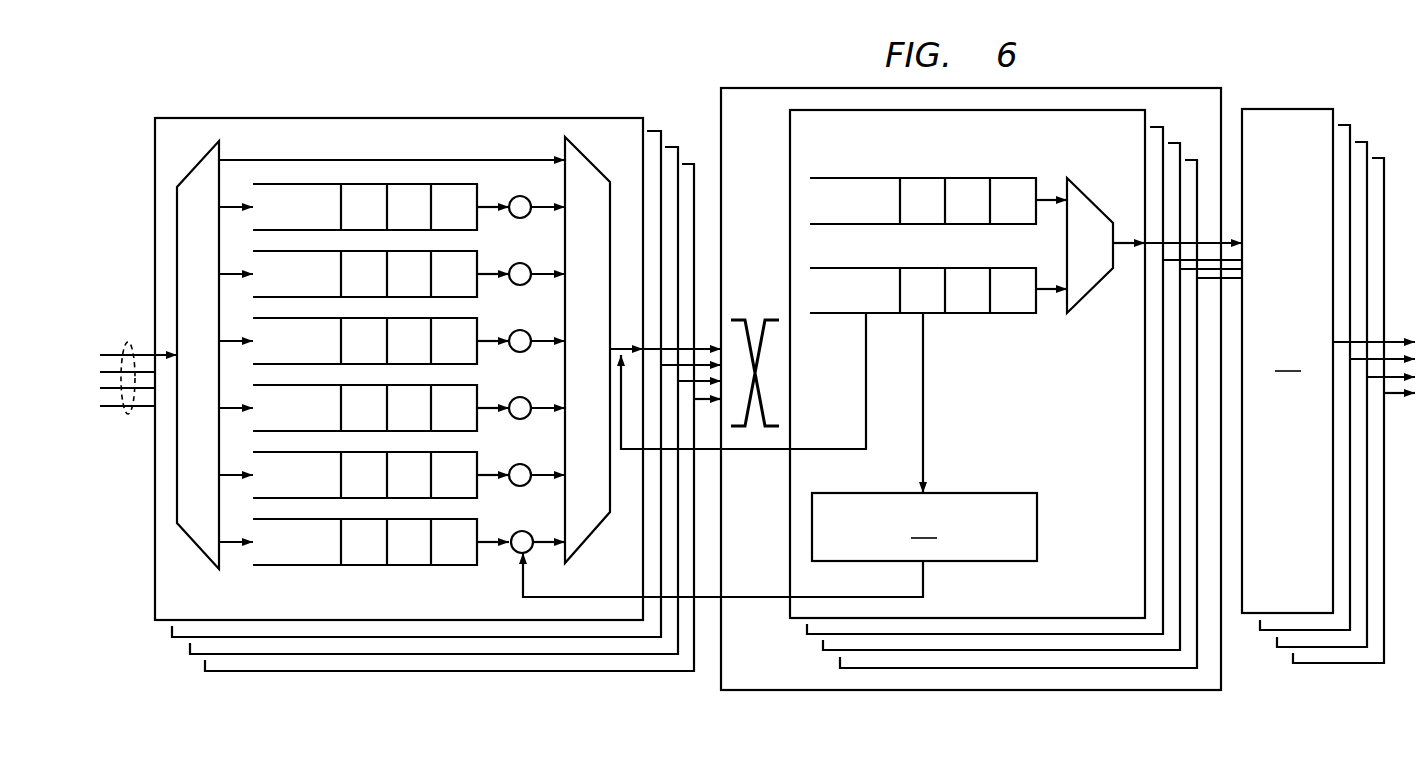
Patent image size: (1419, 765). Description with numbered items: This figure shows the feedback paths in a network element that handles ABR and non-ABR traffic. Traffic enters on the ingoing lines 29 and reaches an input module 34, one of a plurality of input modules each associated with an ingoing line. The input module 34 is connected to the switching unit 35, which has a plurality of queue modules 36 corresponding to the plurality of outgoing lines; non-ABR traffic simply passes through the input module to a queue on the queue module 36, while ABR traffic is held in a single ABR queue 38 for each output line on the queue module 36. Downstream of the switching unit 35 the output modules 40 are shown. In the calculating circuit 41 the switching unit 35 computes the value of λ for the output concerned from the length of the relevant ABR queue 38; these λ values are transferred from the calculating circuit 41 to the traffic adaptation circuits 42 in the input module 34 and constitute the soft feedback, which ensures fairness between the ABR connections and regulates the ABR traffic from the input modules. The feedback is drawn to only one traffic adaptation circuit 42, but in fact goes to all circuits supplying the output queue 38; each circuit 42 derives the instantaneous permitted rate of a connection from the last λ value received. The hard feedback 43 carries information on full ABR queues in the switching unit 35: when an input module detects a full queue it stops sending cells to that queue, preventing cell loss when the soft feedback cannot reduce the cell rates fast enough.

The ingoing lines 29 is at (122, 417).
The input module 34 is at (438, 368).
The switching unit 35 is at (1113, 88).
The queue module 36 is at (882, 389).
The ABR queue 38 is at (968, 315).
The output module 40 is at (1328, 386).
The calculating circuit 41 is at (780, 455).
The traffic adaptation circuit 42 is at (519, 532).
The hard feedback 43 is at (846, 449).